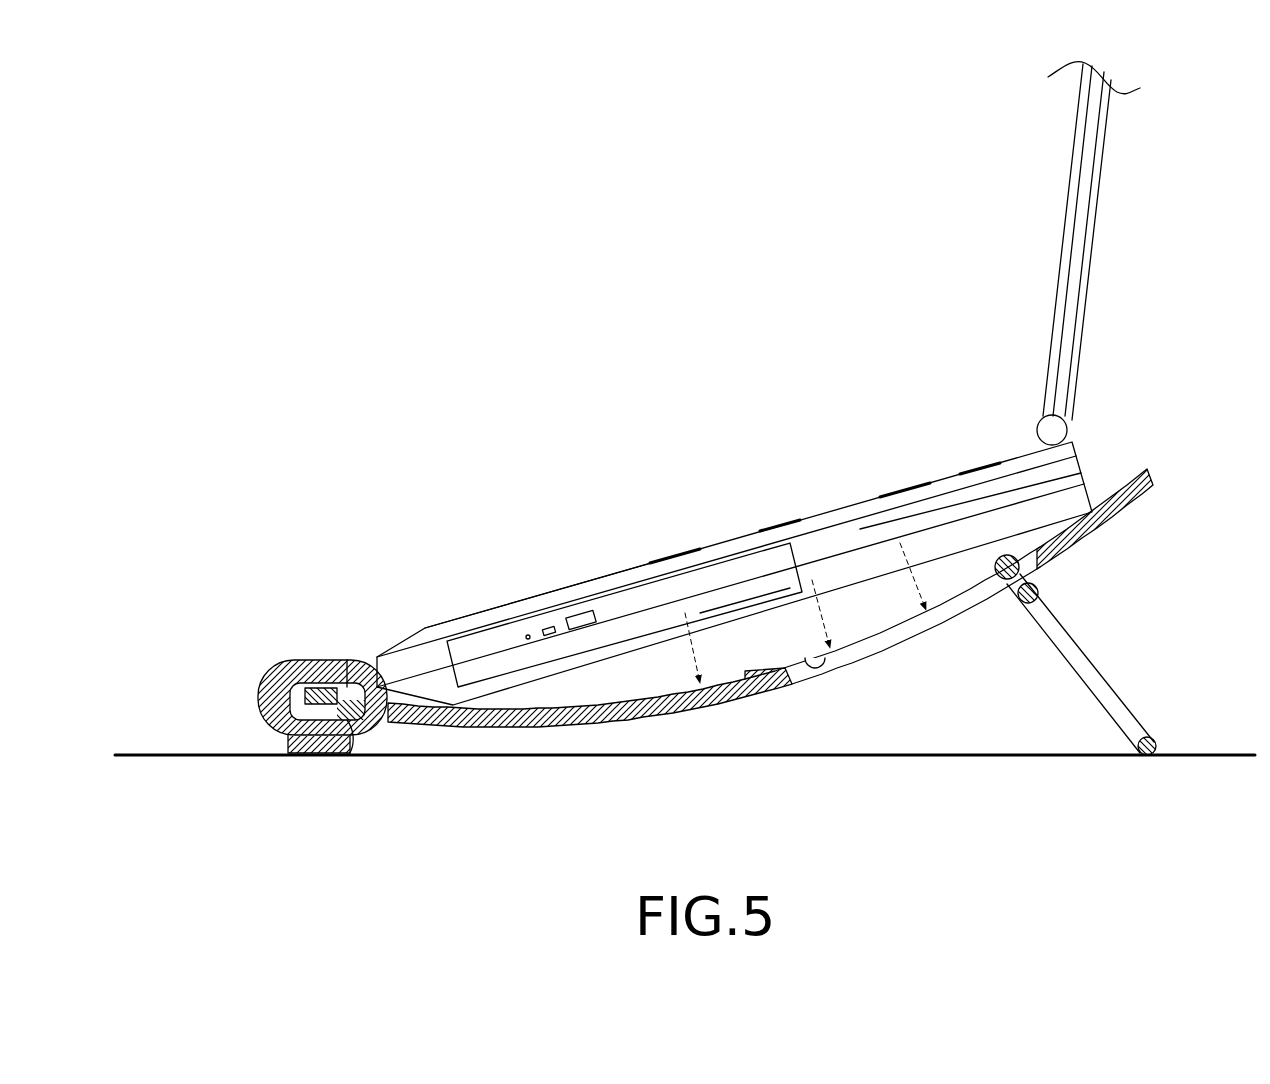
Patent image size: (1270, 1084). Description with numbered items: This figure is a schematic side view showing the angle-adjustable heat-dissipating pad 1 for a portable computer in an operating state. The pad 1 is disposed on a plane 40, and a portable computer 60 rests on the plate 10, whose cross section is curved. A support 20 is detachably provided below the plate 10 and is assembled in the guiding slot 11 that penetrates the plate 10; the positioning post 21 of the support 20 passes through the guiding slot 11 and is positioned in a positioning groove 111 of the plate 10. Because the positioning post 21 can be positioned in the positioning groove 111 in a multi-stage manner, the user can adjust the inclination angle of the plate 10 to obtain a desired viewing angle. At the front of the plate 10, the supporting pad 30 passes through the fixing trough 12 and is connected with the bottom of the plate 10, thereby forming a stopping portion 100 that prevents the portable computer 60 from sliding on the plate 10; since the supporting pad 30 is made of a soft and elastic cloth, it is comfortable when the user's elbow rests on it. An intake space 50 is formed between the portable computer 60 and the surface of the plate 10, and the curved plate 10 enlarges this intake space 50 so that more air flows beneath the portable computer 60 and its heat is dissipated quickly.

The angle-adjustable heat-dissipating pad 1 is at (285, 657).
The plate 10 is at (560, 715).
The guiding slot 11 is at (900, 640).
The positioning groove 111 is at (818, 668).
The fixing trough 12 is at (342, 658).
The support 20 is at (1080, 660).
The positioning post 21 is at (997, 560).
The supporting pad 30 is at (258, 700).
The plane 40 is at (1052, 758).
The intake space 50 is at (745, 640).
The portable computer 60 is at (585, 580).
The stopping portion 100 is at (367, 657).